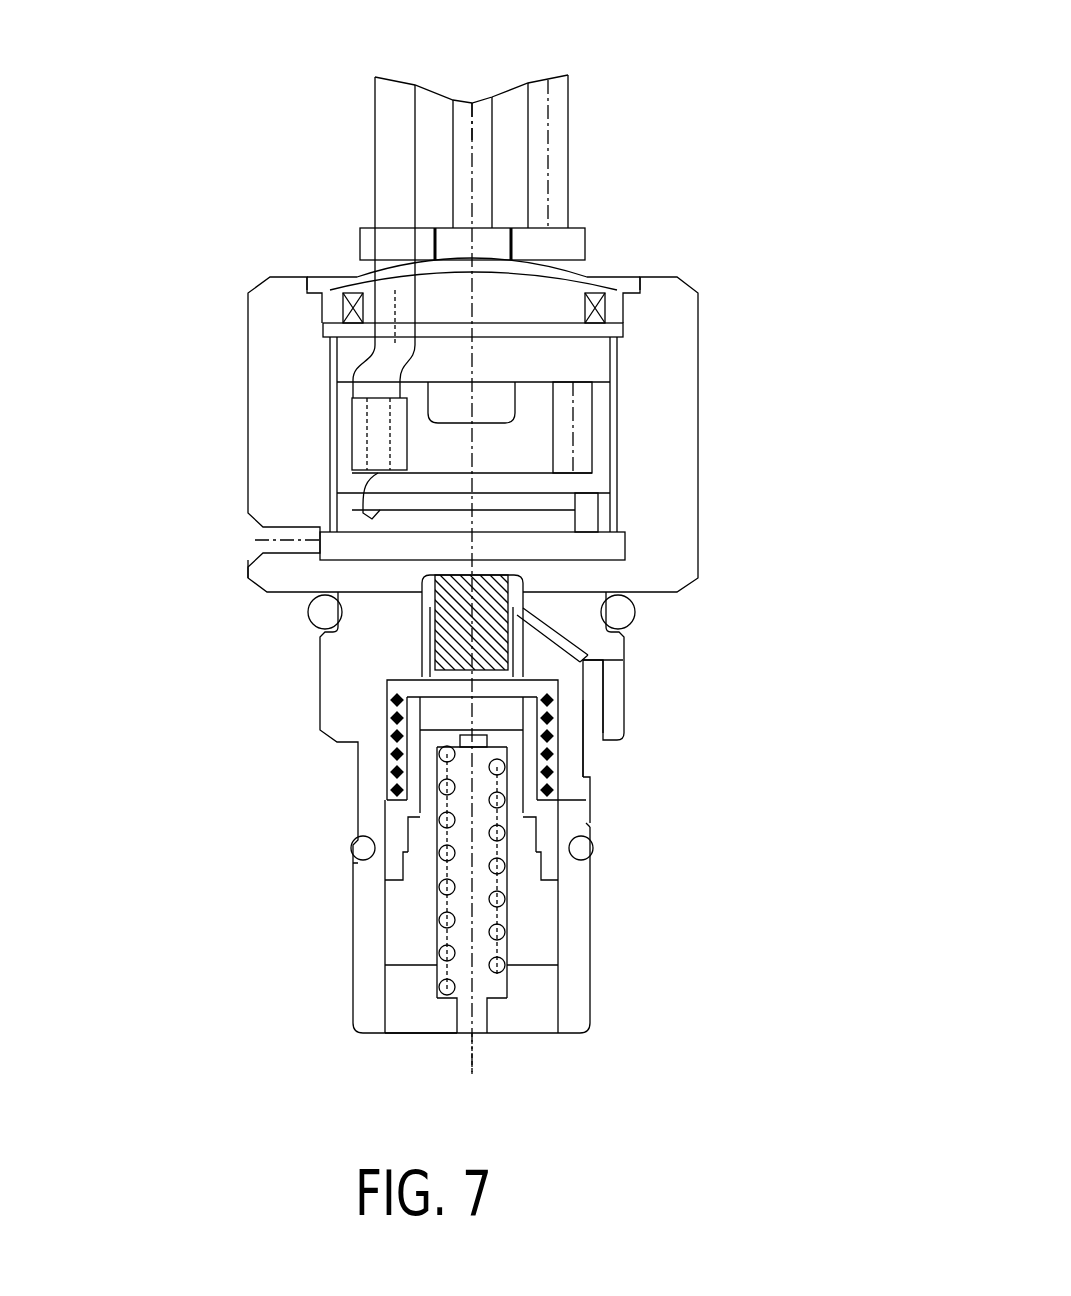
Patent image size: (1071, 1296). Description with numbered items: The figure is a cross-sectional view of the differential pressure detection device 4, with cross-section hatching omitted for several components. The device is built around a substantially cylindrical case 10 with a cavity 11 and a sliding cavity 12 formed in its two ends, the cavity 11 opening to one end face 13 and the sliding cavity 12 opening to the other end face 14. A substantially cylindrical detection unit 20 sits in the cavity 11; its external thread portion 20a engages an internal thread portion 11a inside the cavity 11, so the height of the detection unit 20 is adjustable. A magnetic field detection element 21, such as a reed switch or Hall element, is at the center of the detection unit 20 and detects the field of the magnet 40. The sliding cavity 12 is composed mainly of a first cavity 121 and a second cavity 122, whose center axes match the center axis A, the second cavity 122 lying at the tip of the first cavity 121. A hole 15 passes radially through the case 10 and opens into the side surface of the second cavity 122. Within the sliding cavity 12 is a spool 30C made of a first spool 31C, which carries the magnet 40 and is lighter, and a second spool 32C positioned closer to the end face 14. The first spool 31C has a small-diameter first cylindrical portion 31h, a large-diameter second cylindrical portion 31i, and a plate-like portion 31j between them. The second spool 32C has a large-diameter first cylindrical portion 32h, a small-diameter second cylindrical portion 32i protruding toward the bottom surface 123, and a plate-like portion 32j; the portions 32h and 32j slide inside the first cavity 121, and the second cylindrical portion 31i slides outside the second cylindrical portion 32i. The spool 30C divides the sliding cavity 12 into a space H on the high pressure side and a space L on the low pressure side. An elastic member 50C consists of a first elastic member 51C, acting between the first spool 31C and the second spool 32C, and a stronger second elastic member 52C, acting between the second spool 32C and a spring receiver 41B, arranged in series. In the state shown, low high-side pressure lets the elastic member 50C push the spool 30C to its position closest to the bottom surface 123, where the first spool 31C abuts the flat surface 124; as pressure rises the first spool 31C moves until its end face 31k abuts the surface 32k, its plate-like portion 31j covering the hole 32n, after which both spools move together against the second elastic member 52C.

The differential pressure detection device 4 is at (718, 33).
The center axis A is at (470, 100).
The detection unit 20 is at (570, 157).
The end face 13 is at (670, 277).
The case 10 is at (704, 368).
The internal thread portion 11a is at (335, 355).
The external thread portion 20a is at (345, 398).
The magnetic field detection element 21 is at (368, 488).
The cavity 11 is at (325, 535).
The space in the high pressure side H is at (248, 568).
The magnet 40 is at (308, 610).
The bottom surface 123 is at (663, 592).
The flat surface 124 is at (562, 640).
The hole 15 is at (507, 655).
The second cavity 122 is at (586, 700).
The first cavity 121 is at (585, 748).
The sliding cavity 12 is at (699, 680).
The spool 30C is at (103, 732).
The first spool 31C is at (181, 702).
The first cylindrical portion 31h is at (430, 684).
The plate-like portion 31j is at (413, 699).
The second cylindrical portion 31i is at (392, 725).
The end face 31k is at (394, 770).
The second spool 32C is at (181, 820).
The second cylindrical portion 32i is at (420, 800).
The plate-like portion 32j is at (412, 828).
The first cylindrical portion 32h is at (405, 862).
The surface 32k is at (426, 752).
The hole 32n is at (447, 800).
The elastic member 50C is at (706, 800).
The first elastic member 51C is at (562, 785).
The second elastic member 52C is at (594, 848).
The end face 14 is at (575, 1035).
The spring receiver 41B is at (403, 1017).
The space in the low pressure side L is at (423, 953).